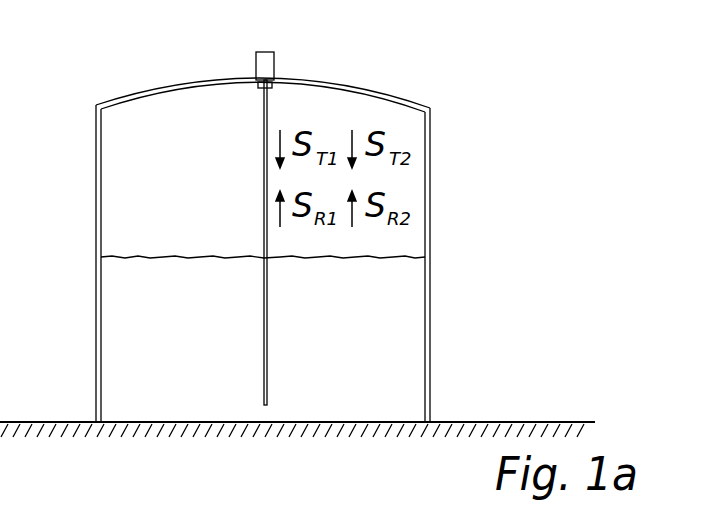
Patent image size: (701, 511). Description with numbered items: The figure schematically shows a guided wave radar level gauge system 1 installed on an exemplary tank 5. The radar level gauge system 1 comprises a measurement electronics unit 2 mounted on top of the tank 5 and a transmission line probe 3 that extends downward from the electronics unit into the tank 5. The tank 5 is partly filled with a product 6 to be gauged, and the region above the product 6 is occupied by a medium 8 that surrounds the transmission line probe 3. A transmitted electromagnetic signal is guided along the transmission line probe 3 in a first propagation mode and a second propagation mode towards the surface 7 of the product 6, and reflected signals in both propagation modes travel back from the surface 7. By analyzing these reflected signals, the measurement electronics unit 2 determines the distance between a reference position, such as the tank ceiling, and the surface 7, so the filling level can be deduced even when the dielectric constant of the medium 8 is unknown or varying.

The radar level gauge system 1 is at (284, 48).
The measurement electronics unit 2 is at (255, 63).
The transmission line probe 3 is at (269, 120).
The tank 5 is at (430, 141).
The product 6 is at (408, 330).
The surface 7 is at (413, 252).
The medium 8 is at (183, 188).